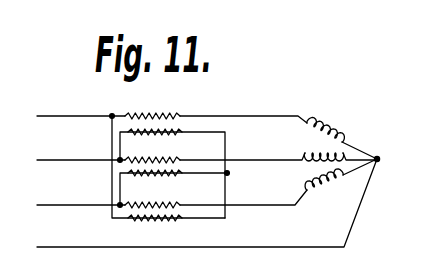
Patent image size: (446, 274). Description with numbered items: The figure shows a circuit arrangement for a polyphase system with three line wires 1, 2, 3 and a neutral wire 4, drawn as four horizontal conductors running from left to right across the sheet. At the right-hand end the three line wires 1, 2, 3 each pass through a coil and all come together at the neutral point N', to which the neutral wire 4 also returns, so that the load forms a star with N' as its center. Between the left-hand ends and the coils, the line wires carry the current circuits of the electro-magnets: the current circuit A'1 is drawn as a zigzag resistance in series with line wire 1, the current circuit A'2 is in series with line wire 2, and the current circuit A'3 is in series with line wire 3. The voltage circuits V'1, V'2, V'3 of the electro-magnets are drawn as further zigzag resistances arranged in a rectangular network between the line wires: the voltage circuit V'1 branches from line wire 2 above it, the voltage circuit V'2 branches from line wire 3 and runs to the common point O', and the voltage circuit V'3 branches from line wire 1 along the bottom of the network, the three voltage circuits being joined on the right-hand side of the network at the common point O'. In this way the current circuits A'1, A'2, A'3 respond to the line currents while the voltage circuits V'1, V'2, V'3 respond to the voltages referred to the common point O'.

The line wire 1 is at (206, 130).
The line wire 2 is at (207, 154).
The line wire 3 is at (207, 183).
The neutral wire 4 is at (207, 203).
The current circuit A'1 is at (152, 109).
The voltage circuit V'1 is at (172, 173).
The current circuit A'2 is at (153, 154).
The voltage circuit V'2 is at (173, 187).
The current circuit A'3 is at (152, 199).
The voltage circuit V'3 is at (168, 178).
The common point O' is at (235, 174).
The neutral point N' is at (382, 151).